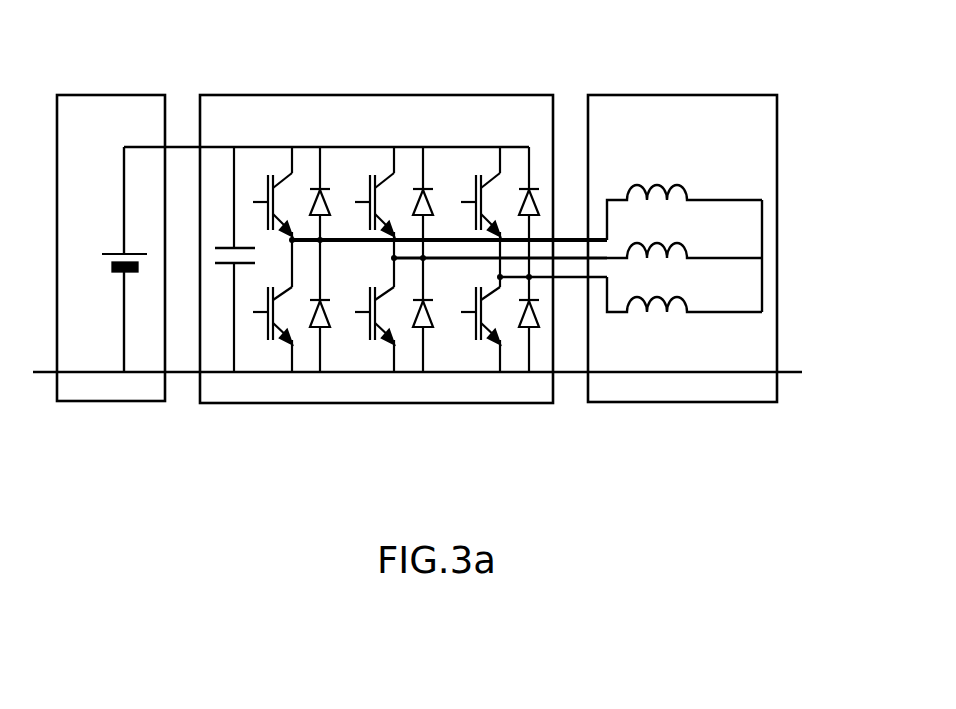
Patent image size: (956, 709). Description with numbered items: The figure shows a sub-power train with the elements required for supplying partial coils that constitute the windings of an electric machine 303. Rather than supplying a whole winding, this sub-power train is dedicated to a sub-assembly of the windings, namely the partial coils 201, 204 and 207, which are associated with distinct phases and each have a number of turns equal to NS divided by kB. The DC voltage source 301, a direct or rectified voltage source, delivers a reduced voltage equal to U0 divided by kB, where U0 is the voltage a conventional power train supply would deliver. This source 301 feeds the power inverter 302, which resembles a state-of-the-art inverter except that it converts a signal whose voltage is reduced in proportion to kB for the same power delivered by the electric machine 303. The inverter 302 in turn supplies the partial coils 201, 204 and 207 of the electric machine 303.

The DC voltage source 301 is at (113, 94).
The power inverter 302 is at (385, 94).
The electric machine 303 is at (713, 210).
The partial coil 201 is at (697, 188).
The partial coil 204 is at (697, 247).
The partial coil 207 is at (697, 300).